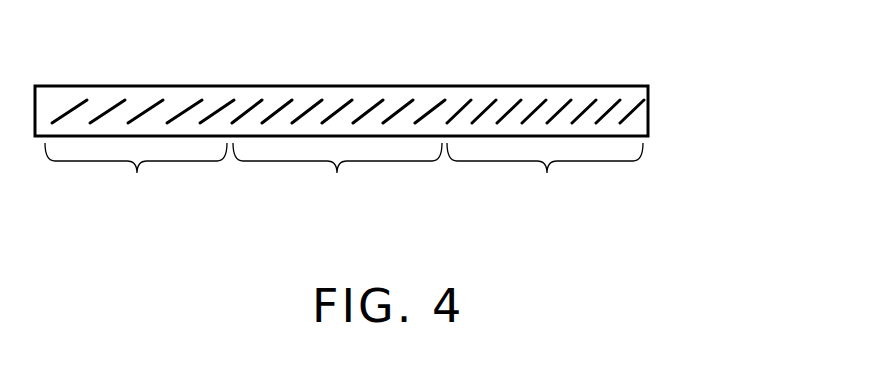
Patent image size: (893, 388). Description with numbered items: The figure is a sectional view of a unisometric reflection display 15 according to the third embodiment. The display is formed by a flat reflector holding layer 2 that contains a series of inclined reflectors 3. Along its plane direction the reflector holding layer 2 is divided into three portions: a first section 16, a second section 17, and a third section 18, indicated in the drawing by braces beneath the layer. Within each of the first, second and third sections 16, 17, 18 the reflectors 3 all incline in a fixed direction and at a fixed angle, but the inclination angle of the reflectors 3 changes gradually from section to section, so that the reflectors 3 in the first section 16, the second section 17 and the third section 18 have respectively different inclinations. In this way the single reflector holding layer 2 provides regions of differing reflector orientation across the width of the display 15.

The reflector holding layer 2 is at (397, 92).
The reflectors 3 is at (145, 112).
The unisometric reflection display 15 is at (682, 107).
The first section 16 is at (136, 176).
The second section 17 is at (337, 176).
The third section 18 is at (545, 176).